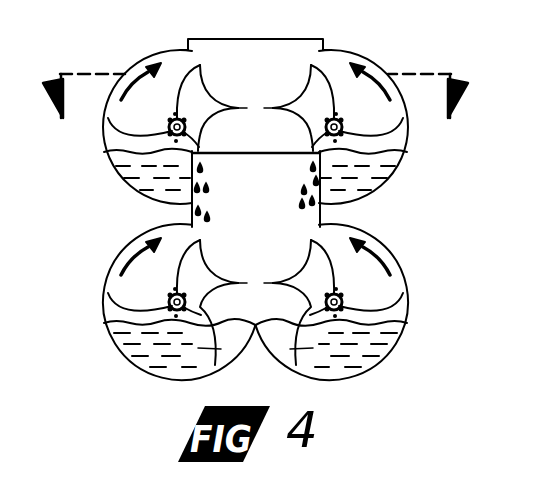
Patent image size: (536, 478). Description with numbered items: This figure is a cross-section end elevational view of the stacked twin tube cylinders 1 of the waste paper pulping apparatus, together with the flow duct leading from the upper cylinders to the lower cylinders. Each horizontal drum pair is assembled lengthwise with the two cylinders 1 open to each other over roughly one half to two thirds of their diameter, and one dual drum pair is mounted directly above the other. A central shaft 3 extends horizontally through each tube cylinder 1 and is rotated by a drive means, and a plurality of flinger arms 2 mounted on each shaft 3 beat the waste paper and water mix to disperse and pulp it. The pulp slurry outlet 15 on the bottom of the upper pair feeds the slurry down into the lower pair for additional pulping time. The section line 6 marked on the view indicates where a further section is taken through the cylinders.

The twin tube cylinder 1 is at (152, 53).
The flinger arm 2 is at (255, 215).
The central shaft 3 is at (171, 118).
The perforated trough or screen 6 is at (254, 82).
The pulp slurry outlet 15 is at (218, 214).